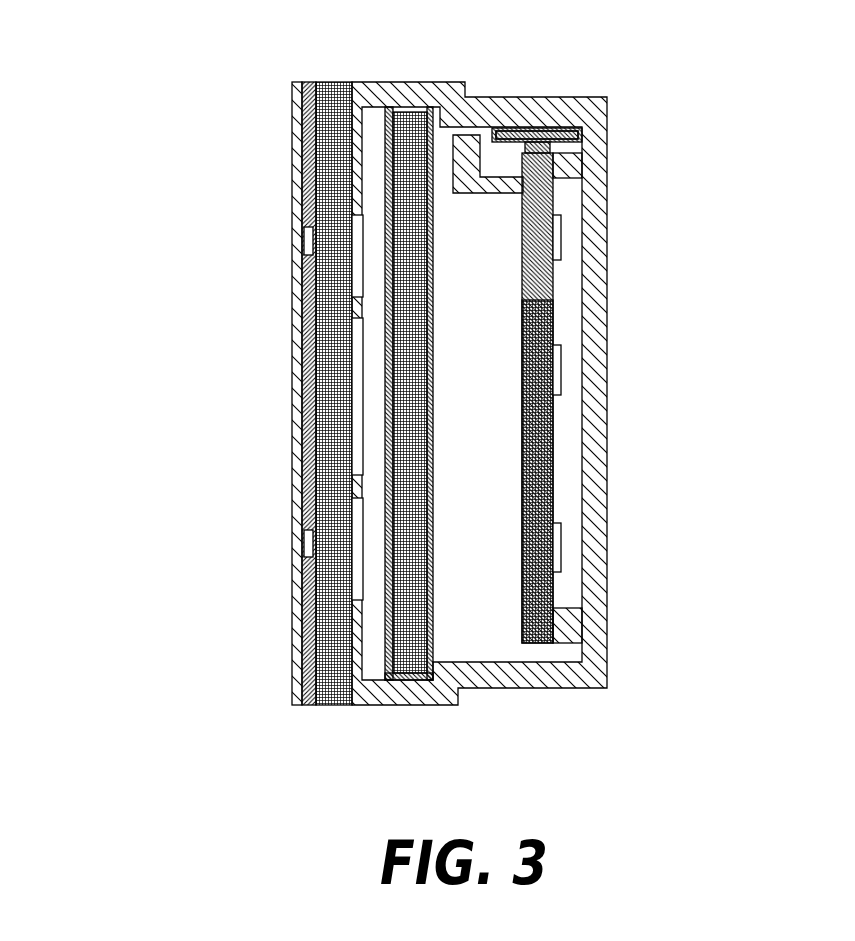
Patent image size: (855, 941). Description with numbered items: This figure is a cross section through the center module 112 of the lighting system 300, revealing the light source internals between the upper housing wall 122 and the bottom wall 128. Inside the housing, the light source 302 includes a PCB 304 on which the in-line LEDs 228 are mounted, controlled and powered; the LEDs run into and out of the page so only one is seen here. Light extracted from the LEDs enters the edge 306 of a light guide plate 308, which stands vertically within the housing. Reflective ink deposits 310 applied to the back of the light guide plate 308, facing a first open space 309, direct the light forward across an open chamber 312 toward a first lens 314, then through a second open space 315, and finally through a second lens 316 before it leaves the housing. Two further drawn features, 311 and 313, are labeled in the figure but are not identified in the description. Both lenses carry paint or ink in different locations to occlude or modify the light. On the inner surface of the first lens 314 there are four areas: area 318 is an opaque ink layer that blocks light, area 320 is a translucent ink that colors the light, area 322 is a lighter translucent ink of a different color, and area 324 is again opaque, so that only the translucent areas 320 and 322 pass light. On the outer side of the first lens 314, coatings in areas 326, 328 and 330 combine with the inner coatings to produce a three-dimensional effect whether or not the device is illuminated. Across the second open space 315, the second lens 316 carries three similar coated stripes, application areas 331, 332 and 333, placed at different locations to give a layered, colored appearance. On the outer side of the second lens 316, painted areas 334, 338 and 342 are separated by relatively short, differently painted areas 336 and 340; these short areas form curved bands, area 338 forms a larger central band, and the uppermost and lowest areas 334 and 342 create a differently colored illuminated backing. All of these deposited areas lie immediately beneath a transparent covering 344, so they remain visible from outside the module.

The center module 112 is at (152, 622).
The upper housing wall 122 is at (410, 82).
The bottom wall 128 is at (375, 706).
The LED 228 is at (556, 150).
The system 300 is at (600, 695).
The light source 302 is at (563, 265).
The PCB 304 is at (584, 134).
The edge of light guide plate 306 is at (537, 150).
The light guide plate 308 is at (538, 328).
The first open space 309 is at (573, 390).
The reflective ink deposits 310 is at (560, 240).
The retaining block 311 is at (568, 180).
The open chamber 312 is at (483, 420).
The ledge 313 is at (585, 606).
The first lens 314 is at (410, 597).
The second open space 315 is at (358, 650).
The second lens 316 is at (330, 378).
The area 318 is at (437, 243).
The area 320 is at (437, 346).
The area 322 is at (437, 416).
The area 324 is at (437, 545).
The area 326 is at (383, 150).
The area 328 is at (355, 290).
The area 330 is at (378, 588).
The application area 331 is at (437, 291).
The application area 332 is at (363, 447).
The application area 333 is at (398, 705).
The material deposition area 334 is at (300, 130).
The material deposition area 336 is at (300, 232).
The material deposition area 338 is at (300, 418).
The material deposition area 340 is at (300, 525).
The material deposition area 342 is at (300, 570).
The transparent covering 344 is at (292, 376).